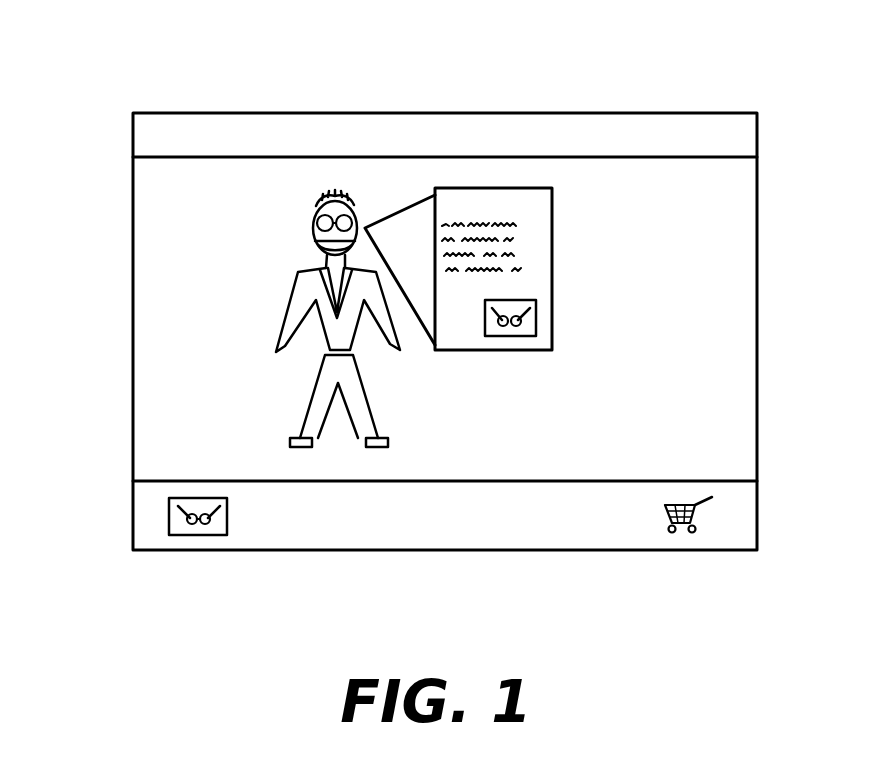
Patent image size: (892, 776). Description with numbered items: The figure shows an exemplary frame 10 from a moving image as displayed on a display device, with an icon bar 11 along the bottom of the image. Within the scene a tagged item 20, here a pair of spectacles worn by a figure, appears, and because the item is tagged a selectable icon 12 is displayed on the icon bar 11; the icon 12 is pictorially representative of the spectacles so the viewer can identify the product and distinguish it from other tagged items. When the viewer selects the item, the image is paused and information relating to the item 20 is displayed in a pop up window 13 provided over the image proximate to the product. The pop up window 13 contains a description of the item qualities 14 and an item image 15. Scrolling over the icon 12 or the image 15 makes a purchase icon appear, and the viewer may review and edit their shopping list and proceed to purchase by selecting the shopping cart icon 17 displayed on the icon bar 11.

The frame 10 is at (163, 198).
The icon bar 11 is at (465, 551).
The selectable icon 12 is at (182, 528).
The pop up window 13 is at (540, 188).
The description of the item qualities 14 is at (530, 232).
The item image 15 is at (530, 316).
The shopping cart icon 17 is at (700, 516).
The tagged item 20 is at (318, 230).